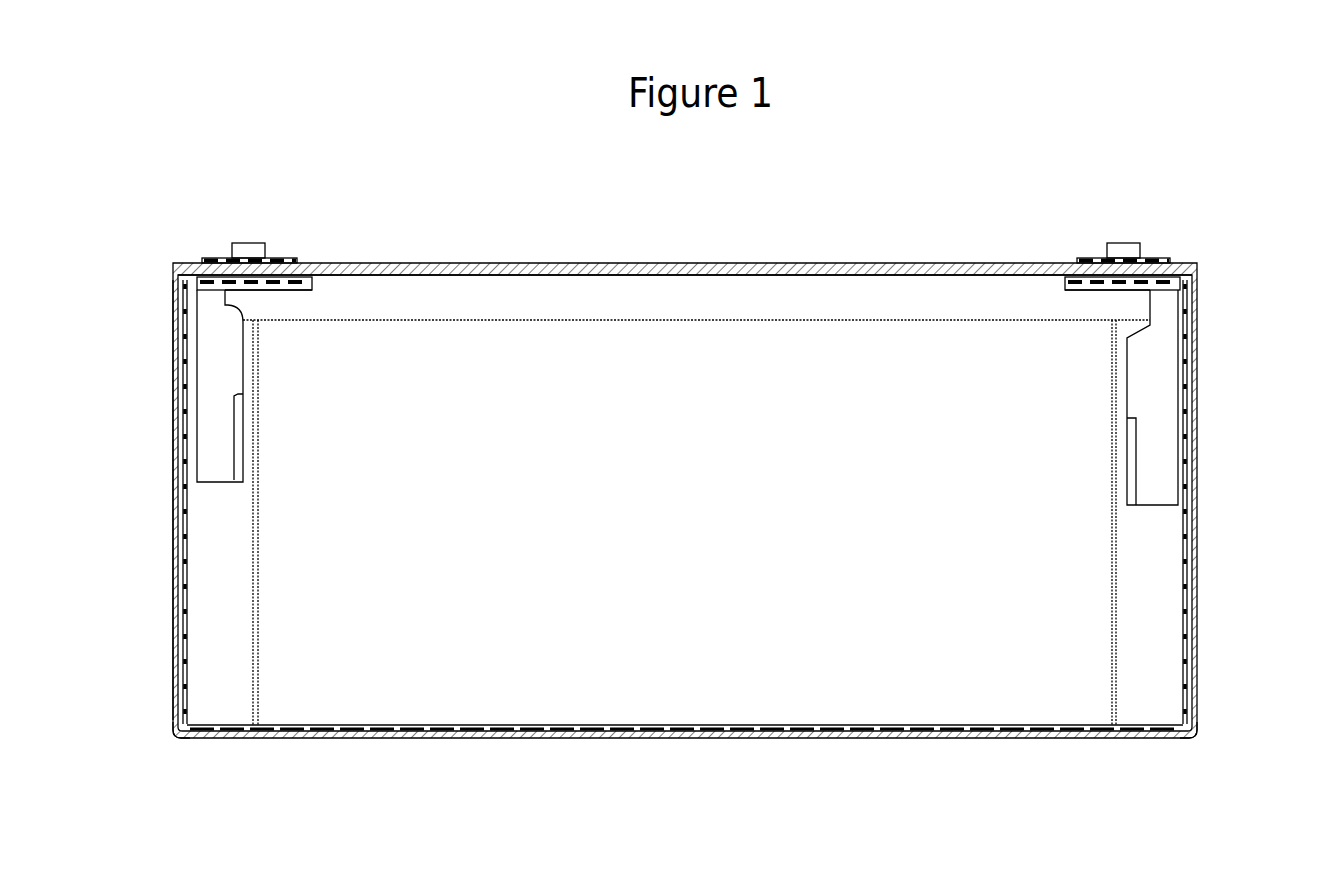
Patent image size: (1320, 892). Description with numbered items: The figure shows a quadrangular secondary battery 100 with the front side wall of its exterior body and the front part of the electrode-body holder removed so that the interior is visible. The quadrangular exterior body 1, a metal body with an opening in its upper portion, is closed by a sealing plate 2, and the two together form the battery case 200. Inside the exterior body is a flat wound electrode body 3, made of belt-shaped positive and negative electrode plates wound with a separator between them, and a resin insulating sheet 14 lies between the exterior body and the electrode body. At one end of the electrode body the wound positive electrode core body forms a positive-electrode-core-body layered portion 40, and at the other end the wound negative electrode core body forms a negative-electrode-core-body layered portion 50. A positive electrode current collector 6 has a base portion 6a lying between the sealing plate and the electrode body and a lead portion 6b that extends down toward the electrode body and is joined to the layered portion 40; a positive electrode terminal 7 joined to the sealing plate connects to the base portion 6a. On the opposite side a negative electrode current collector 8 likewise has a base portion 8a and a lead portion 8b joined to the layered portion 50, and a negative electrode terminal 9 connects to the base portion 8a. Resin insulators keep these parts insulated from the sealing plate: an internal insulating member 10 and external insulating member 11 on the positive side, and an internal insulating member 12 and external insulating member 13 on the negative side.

The quadrangular secondary battery 100 is at (633, 160).
The quadrangular exterior body 1 is at (1198, 597).
The sealing plate 2 is at (505, 270).
The wound electrode body 3 is at (700, 706).
The positive electrode current collector 6 is at (1163, 358).
The base portion 6a is at (1067, 285).
The lead portion 6b is at (1160, 382).
The positive electrode terminal 7 is at (1123, 243).
The negative electrode current collector 8 is at (205, 368).
The base portion 8a is at (307, 289).
The lead portion 8b is at (217, 410).
The negative electrode terminal 9 is at (247, 243).
The internal insulating member 10 is at (1145, 265).
The external insulating member 11 is at (1080, 258).
The internal insulating member 12 is at (312, 280).
The external insulating member 13 is at (292, 258).
The insulating sheet 14 is at (181, 658).
The positive-electrode-core-body layered portion 40 is at (1157, 707).
The negative-electrode-core-body layered portion 50 is at (213, 707).
The battery case 200 is at (1208, 535).